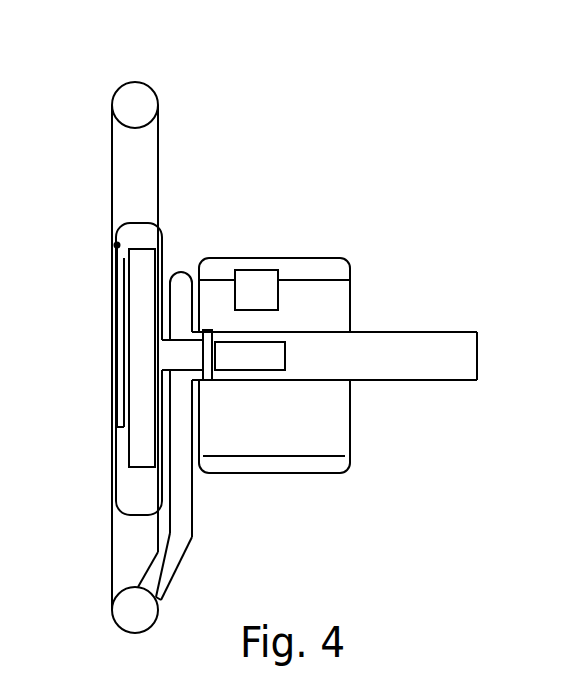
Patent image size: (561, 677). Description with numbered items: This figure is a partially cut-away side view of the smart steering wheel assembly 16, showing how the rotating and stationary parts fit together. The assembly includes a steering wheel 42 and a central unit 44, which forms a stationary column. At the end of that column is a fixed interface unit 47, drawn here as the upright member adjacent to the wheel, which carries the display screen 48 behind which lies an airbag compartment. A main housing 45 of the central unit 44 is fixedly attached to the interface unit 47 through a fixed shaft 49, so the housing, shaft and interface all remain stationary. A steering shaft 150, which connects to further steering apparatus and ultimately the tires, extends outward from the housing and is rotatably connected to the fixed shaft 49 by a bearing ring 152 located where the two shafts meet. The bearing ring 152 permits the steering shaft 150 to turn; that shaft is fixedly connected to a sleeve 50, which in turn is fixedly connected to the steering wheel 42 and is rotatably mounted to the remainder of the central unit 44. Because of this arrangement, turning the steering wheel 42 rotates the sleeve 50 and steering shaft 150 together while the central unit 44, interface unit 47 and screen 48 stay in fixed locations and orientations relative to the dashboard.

The smart steering wheel assembly 16 is at (302, 108).
The steering wheel 42 is at (137, 97).
The central unit 44 is at (222, 258).
The main housing 45 is at (347, 262).
The interface unit 47 is at (166, 238).
The display screen 48 is at (120, 302).
The fixed shaft 49 is at (272, 372).
The sleeve 50 is at (138, 613).
The steering shaft 150 is at (392, 338).
The bearing ring 152 is at (220, 355).